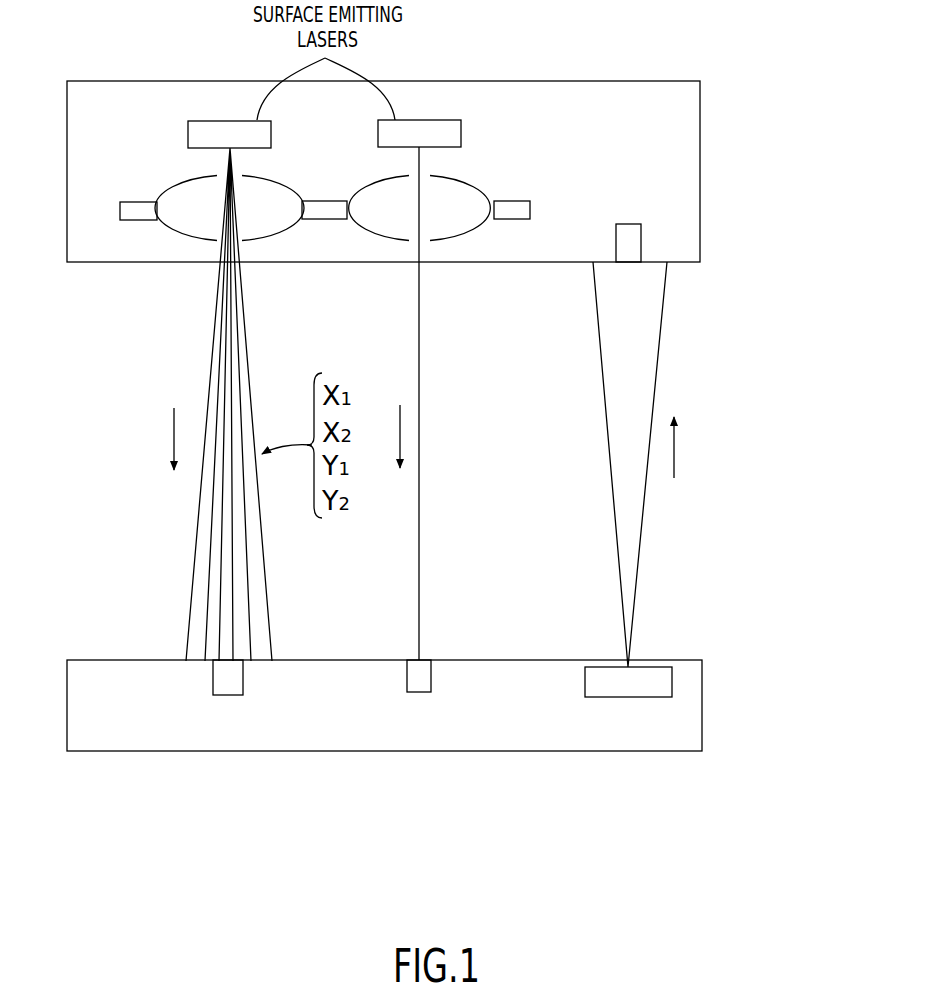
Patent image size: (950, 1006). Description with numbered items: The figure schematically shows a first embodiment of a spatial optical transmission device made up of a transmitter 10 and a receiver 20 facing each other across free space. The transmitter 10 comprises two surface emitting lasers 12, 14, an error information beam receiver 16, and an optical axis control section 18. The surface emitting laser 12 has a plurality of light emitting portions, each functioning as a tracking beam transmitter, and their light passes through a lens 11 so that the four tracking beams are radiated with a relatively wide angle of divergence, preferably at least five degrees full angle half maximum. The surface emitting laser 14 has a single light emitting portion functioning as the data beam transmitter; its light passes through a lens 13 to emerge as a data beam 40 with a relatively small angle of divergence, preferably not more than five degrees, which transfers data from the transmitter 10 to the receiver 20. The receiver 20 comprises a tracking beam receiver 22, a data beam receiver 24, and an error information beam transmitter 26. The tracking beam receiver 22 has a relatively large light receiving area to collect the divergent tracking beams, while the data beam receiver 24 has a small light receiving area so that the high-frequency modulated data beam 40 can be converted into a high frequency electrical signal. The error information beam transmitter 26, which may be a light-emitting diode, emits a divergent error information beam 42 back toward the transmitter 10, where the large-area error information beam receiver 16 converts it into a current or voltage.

The transmitter 10 is at (720, 155).
The lens 11 is at (182, 182).
The surface emitting laser 12 is at (221, 120).
The lens 13 is at (385, 240).
The surface emitting laser 14 is at (419, 120).
The error information beam receiver 16 is at (628, 224).
The optical axis control section 18 is at (100, 300).
The receiver 20 is at (665, 660).
The tracking beam receiver 22 is at (224, 697).
The data beam receiver 24 is at (412, 694).
The error information beam transmitter 26 is at (612, 699).
The data beam 40 is at (419, 458).
The error information beam 42 is at (647, 562).